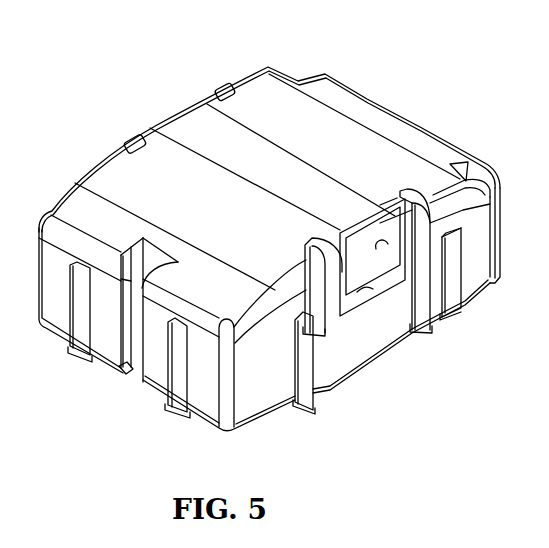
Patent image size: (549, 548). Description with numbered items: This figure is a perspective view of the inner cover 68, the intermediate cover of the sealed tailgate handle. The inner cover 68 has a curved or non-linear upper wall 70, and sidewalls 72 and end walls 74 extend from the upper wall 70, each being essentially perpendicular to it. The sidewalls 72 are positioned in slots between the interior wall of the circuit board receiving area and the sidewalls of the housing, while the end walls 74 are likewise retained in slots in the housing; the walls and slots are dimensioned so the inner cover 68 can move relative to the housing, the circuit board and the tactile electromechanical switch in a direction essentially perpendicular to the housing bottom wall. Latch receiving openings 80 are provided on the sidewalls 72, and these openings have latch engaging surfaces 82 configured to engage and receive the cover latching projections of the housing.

The inner cover 68 is at (436, 84).
The upper wall 70 is at (245, 108).
The sidewalls 72 is at (477, 285).
The end walls 74 is at (208, 395).
The latch receiving openings 80 is at (395, 290).
The latch engaging surfaces 82 is at (360, 277).